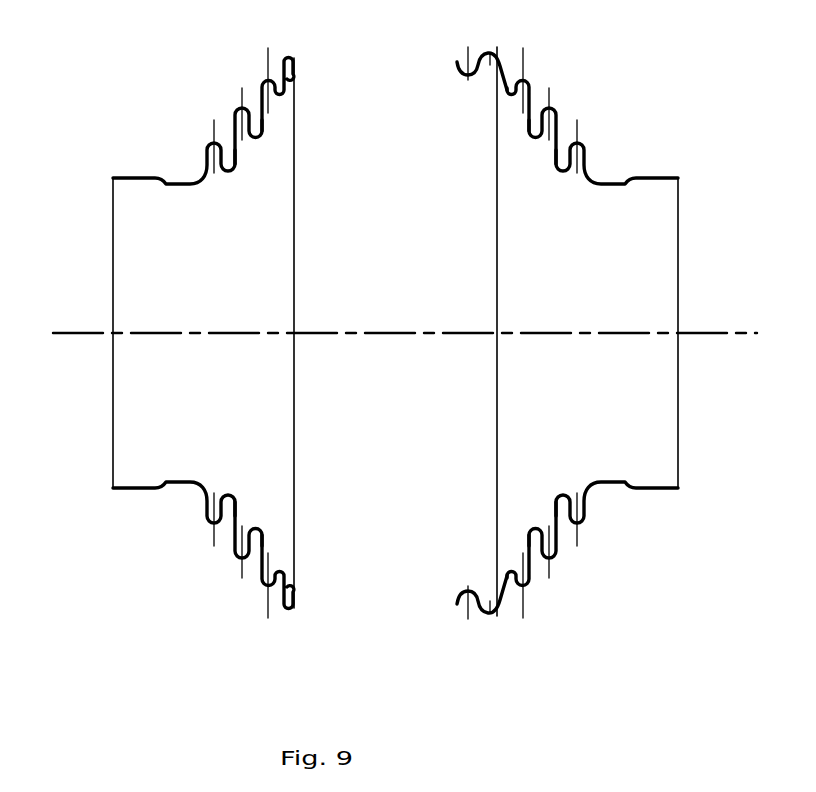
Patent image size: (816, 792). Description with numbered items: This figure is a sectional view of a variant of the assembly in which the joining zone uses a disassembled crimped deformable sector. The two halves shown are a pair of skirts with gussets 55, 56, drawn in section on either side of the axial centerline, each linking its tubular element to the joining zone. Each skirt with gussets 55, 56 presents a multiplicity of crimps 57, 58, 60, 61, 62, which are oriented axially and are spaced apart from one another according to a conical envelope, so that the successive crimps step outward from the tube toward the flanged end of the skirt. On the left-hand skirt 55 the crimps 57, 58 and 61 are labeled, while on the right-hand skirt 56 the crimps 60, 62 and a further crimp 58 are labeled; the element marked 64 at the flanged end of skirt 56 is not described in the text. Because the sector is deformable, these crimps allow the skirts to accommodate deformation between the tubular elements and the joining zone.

The skirt with gussets 55 is at (194, 134).
The skirt with gussets 56 is at (557, 96).
The crimp 57 is at (267, 80).
The crimp 58 is at (236, 114).
The crimp 60 is at (528, 86).
The crimp 61 is at (207, 147).
The crimp 62 is at (562, 113).
The flanged end portion of second bellows 64 is at (586, 145).